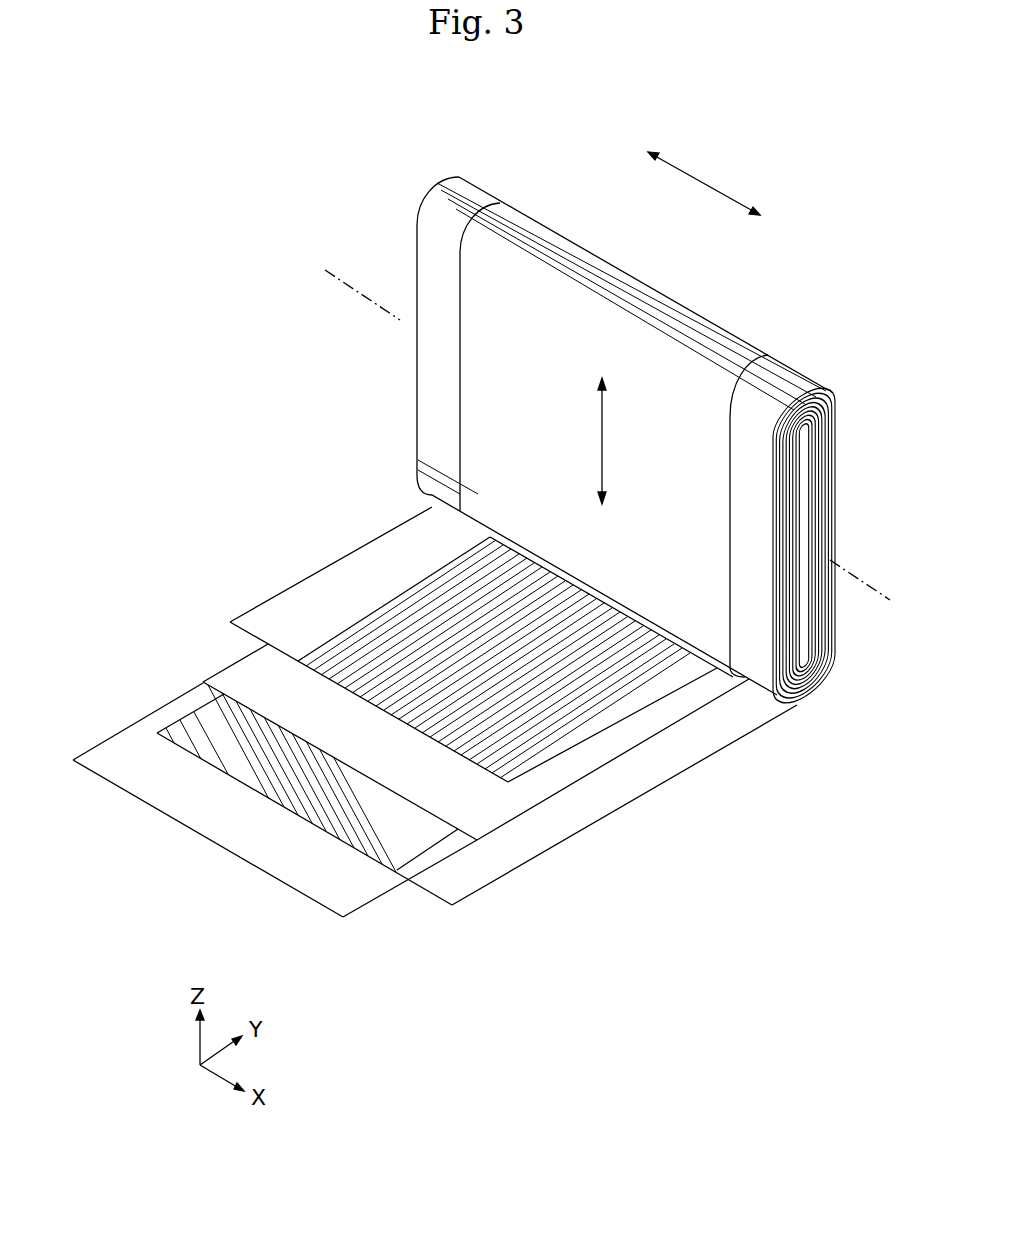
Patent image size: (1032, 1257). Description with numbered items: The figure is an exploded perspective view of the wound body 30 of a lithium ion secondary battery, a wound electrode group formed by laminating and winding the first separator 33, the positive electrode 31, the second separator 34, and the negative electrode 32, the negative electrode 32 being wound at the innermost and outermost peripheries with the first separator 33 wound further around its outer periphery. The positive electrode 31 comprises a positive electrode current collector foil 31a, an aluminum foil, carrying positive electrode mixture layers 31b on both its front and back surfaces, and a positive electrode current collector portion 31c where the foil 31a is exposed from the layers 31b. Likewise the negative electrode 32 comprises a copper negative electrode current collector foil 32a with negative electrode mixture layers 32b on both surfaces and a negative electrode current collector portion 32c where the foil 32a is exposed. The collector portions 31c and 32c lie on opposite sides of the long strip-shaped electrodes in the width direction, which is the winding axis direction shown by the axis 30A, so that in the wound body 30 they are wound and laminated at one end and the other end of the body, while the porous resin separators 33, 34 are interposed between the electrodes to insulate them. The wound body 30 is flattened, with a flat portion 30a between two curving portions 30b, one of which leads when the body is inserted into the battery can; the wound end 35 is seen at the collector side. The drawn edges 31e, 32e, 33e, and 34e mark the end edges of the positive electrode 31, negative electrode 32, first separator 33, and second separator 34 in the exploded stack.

The wound body 30 is at (601, 550).
The winding axis 30A is at (365, 262).
The flat portion 30a is at (505, 425).
The curving portion 30b is at (652, 300).
The positive electrode 31 is at (473, 680).
The positive electrode current collector foil 31a is at (275, 597).
The positive electrode mixture layers 31b is at (385, 633).
The positive electrode current collector portion 31c is at (440, 356).
The positive electrode end edge 31e is at (430, 745).
The negative electrode 32 is at (448, 823).
The negative electrode current collector foil 32a is at (553, 847).
The negative electrode mixture layers 32b is at (427, 837).
The negative electrode current collector portion 32c is at (752, 497).
The negative electrode end edge 32e is at (277, 773).
The first separator 33 is at (258, 789).
The separator end edge 33e is at (177, 785).
The second separator 34 is at (449, 736).
The separator end edge 34e is at (375, 762).
The wound end portion 35 is at (830, 478).